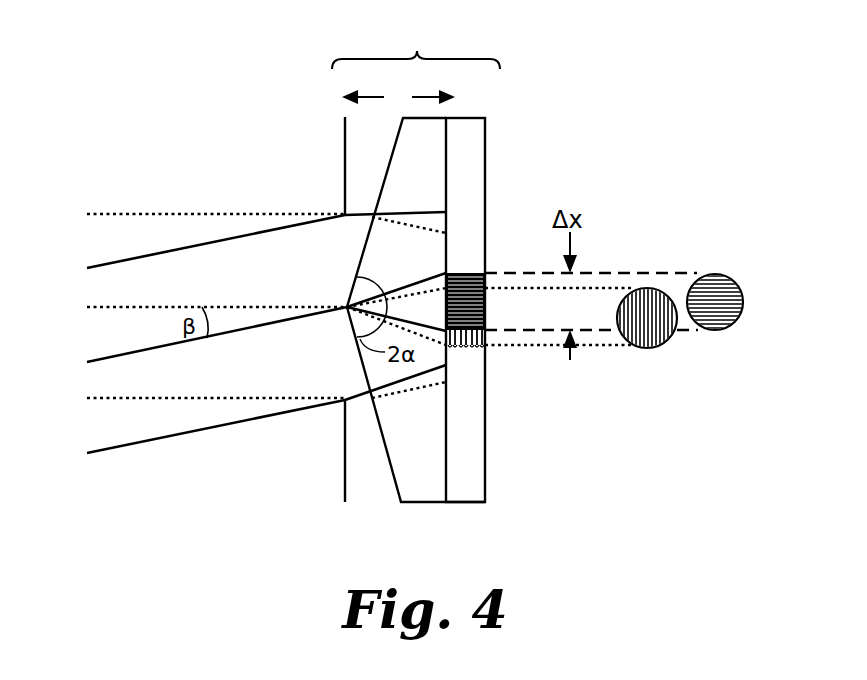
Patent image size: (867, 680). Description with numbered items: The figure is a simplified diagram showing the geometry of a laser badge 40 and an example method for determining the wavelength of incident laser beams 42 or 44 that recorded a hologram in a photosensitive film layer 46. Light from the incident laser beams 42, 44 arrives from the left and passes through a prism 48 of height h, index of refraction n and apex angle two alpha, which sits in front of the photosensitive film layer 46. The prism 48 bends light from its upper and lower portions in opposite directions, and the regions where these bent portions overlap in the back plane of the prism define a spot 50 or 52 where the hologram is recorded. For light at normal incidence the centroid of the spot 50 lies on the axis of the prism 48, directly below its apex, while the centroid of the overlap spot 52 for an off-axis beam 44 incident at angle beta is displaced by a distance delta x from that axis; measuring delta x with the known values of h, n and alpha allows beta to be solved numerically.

The laser badge 40 is at (416, 66).
The incident laser beam 42 is at (148, 214).
The off-axis incident laser beam 44 is at (123, 260).
The photosensitive film layer 46 is at (485, 120).
The prism 48 is at (425, 502).
The overlap spot for normal incidence 50 is at (660, 347).
The overlap spot for off-axis beam 52 is at (743, 312).